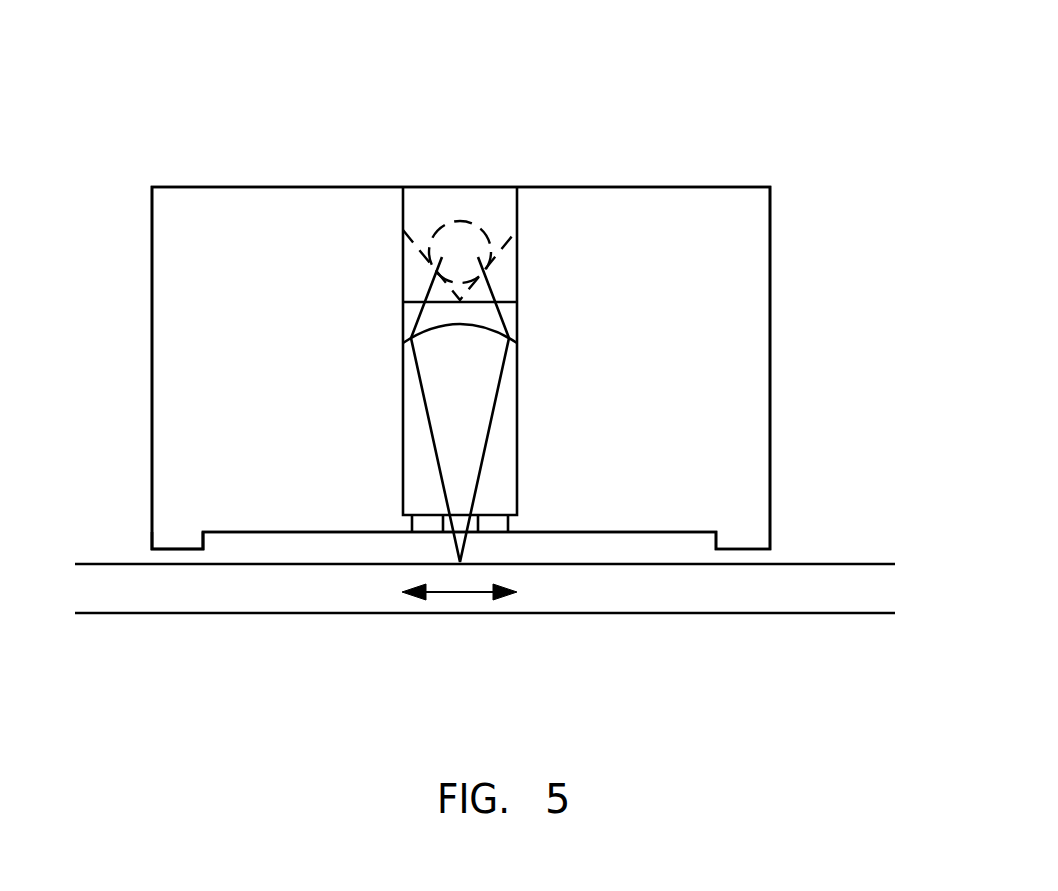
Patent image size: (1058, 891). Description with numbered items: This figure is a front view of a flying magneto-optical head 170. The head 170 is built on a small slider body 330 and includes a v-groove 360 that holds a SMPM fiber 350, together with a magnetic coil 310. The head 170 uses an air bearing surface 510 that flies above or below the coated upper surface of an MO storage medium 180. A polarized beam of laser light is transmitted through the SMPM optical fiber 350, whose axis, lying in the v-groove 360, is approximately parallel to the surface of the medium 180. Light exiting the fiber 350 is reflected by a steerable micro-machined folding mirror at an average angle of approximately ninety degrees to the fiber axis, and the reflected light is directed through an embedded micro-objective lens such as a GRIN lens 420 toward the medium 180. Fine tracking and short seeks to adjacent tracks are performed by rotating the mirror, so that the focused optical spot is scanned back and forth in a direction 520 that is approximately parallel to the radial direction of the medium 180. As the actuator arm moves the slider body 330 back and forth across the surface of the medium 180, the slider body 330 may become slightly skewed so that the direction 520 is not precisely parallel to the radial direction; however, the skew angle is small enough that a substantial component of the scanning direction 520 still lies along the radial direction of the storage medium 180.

The flying magneto-optical head 170 is at (753, 43).
The slider body 330 is at (313, 186).
The magnetic coil 310 is at (398, 518).
The SMPM fiber 350 is at (477, 222).
The v-groove 360 is at (490, 260).
The GRIN lens 420 is at (398, 357).
The MO storage medium 180 is at (806, 614).
The air bearing surface 510 is at (170, 550).
The scanning direction 520 is at (463, 592).